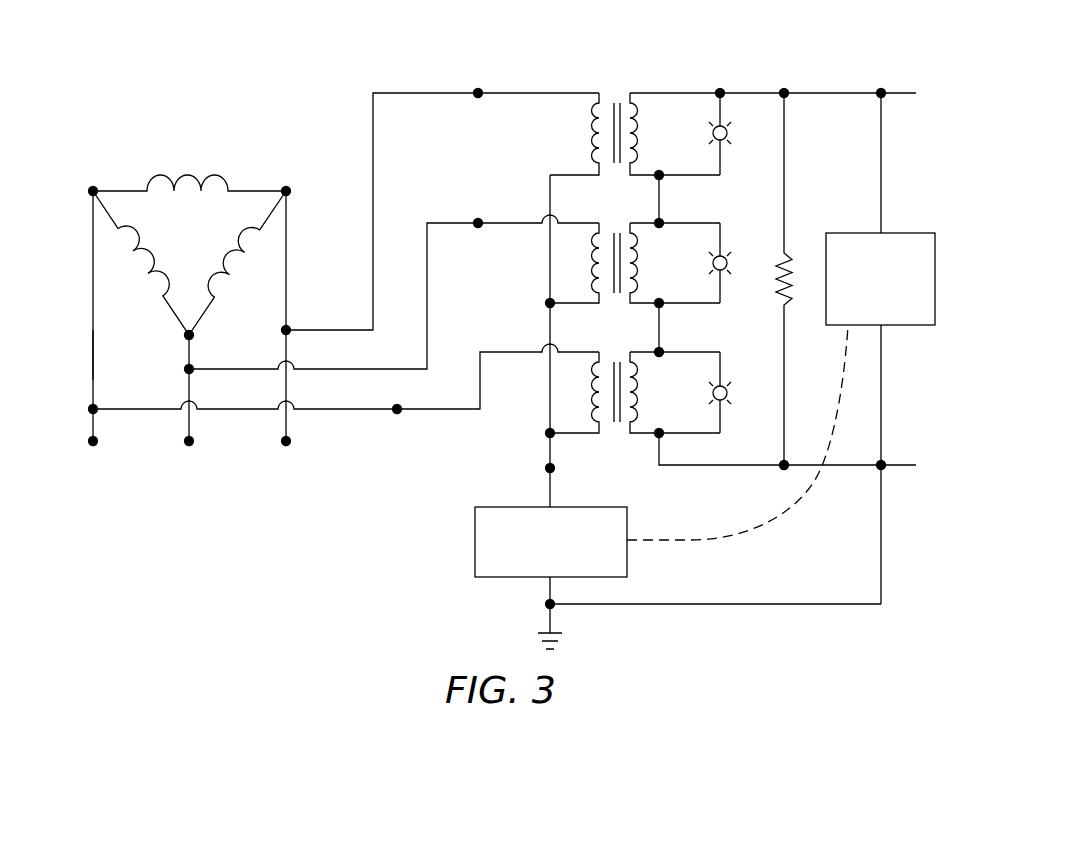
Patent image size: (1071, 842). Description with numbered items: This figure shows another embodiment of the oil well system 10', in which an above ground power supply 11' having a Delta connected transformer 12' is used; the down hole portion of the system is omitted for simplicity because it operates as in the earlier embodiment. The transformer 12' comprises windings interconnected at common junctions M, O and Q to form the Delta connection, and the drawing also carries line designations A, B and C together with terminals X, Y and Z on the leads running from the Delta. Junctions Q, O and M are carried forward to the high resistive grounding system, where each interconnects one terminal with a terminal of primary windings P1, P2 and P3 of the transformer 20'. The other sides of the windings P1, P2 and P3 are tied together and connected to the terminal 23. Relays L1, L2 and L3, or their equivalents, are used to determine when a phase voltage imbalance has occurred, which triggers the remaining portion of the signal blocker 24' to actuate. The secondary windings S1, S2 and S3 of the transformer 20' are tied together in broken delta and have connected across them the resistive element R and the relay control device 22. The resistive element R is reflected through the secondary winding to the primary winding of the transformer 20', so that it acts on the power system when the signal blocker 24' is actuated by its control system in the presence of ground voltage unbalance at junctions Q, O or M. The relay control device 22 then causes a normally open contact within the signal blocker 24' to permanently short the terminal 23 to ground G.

The oil well system 10' is at (318, 316).
The above ground power supply 11' is at (75, 316).
The Delta connected transformer 12' is at (190, 257).
The transformer 20' is at (733, 256).
The relay control device 22 is at (847, 231).
The terminal 23 is at (556, 468).
The signal blocker 24' is at (624, 451).
The resistive element R is at (783, 256).
The ground G is at (557, 636).
The primary winding P1 is at (598, 123).
The primary winding P2 is at (598, 253).
The primary winding P3 is at (598, 383).
The secondary winding S1 is at (657, 126).
The secondary winding S2 is at (657, 256).
The secondary winding S3 is at (657, 386).
The relay L1 is at (729, 136).
The relay L2 is at (729, 266).
The relay L3 is at (729, 396).
The phase lead A is at (92, 358).
The phase lead B is at (191, 341).
The phase lead C is at (287, 309).
The common junction M is at (92, 190).
The common junction O is at (189, 336).
The common junction Q is at (287, 190).
The terminal X is at (93, 443).
The terminal Y is at (189, 443).
The terminal Z is at (288, 442).